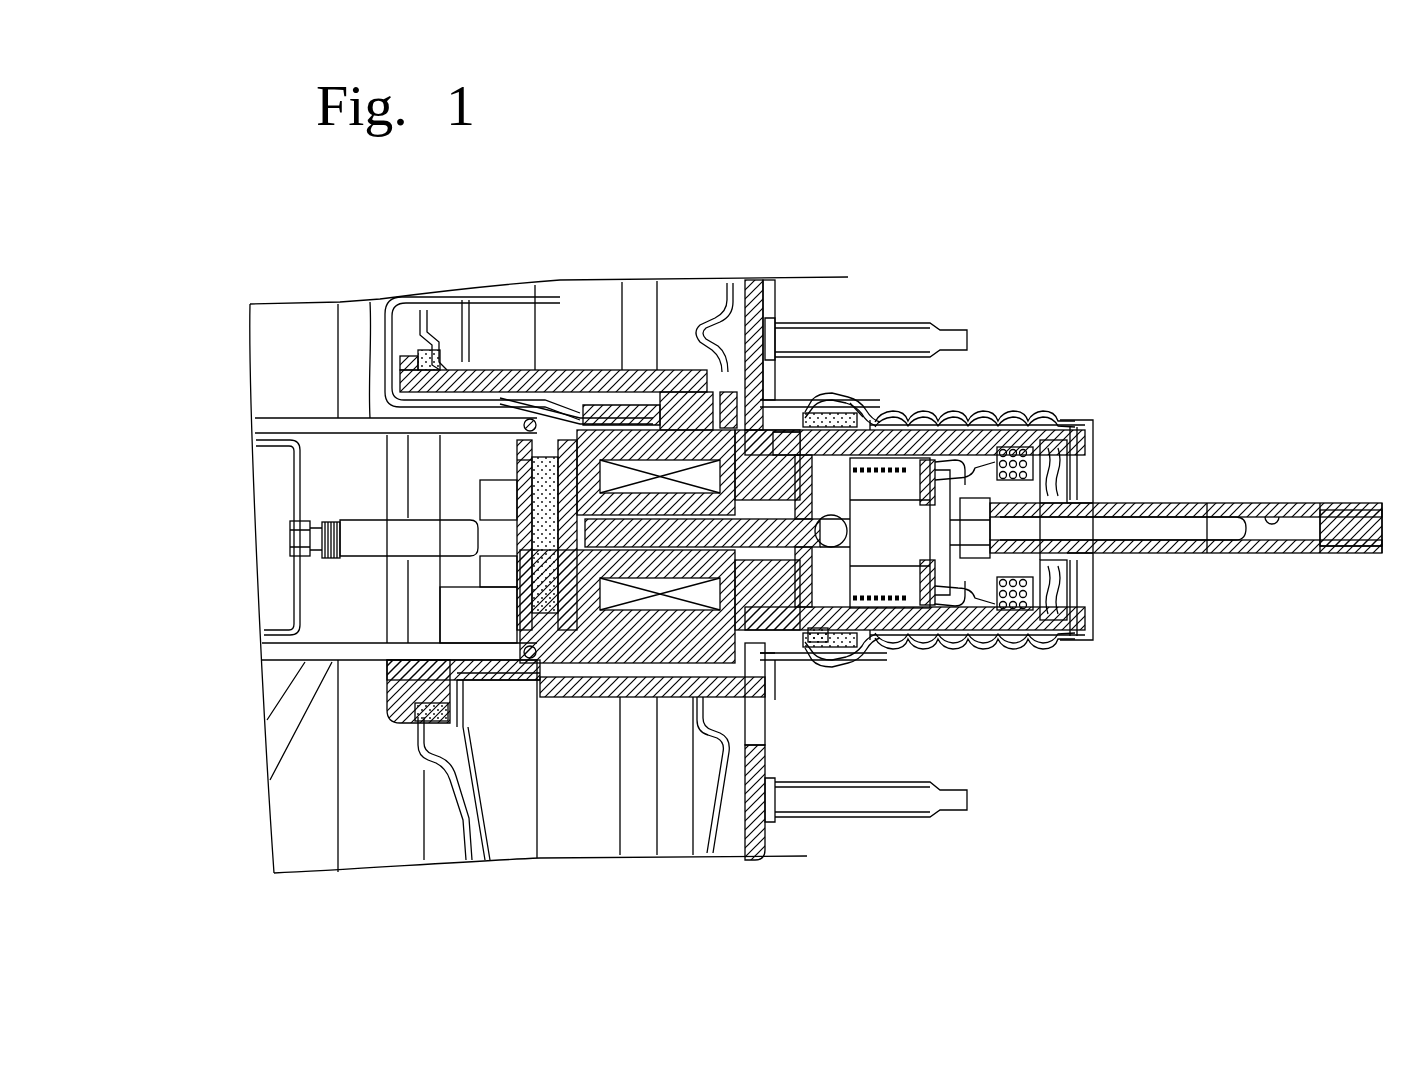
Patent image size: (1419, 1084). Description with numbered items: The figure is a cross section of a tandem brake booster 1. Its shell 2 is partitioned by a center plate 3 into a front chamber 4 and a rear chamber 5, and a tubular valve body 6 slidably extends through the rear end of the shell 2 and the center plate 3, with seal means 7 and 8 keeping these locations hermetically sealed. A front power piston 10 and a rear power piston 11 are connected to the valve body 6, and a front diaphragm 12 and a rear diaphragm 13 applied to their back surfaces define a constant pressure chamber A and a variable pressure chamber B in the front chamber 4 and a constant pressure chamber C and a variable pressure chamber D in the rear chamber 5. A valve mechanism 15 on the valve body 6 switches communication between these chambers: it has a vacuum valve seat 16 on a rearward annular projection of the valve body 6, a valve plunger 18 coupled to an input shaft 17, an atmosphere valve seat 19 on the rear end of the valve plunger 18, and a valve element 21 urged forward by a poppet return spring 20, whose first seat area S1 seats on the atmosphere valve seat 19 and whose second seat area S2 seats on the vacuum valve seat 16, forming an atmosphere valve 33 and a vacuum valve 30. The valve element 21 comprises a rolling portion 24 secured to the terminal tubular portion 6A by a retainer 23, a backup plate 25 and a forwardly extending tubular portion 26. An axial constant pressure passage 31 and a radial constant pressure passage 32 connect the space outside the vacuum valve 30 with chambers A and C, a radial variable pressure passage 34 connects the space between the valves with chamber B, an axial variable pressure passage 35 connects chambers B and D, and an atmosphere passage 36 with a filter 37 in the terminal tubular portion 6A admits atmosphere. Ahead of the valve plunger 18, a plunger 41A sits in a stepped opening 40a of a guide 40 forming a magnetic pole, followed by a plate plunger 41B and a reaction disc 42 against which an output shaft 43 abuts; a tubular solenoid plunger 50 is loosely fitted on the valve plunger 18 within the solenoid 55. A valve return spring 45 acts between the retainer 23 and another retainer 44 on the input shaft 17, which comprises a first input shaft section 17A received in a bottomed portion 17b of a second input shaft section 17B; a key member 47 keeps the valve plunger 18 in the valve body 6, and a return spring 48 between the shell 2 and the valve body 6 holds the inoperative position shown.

The tandem brake booster 1 is at (770, 258).
The shell 2 is at (273, 450).
The center plate 3 is at (493, 850).
The front chamber 4 is at (368, 847).
The rear chamber 5 is at (592, 847).
The valve body 6 is at (593, 372).
The terminal tubular portion 6A is at (1020, 437).
The seal means 7 is at (818, 423).
The seal means 8 is at (495, 340).
The front power piston 10 is at (460, 840).
The rear power piston 11 is at (707, 827).
The front diaphragm 12 is at (487, 843).
The rear diaphragm 13 is at (720, 840).
The valve mechanism 15 is at (940, 465).
The vacuum valve seat 16 is at (867, 627).
The input shaft 17 is at (1217, 545).
The first input shaft section 17A is at (1153, 530).
The second input shaft section 17B is at (1310, 550).
The bottomed portion 17b is at (1277, 517).
The valve plunger 18 is at (830, 480).
The atmosphere valve seat 19 is at (907, 630).
The poppet return spring 20 is at (948, 532).
The valve element 21 is at (953, 627).
The retainer 23 is at (973, 467).
The rolling portion 24 is at (967, 734).
The backup plate 25 is at (916, 532).
The tubular portion 26 is at (739, 531).
The vacuum valve 30 is at (873, 480).
The constant pressure passage 31 is at (770, 455).
The radial constant pressure passage 32 is at (703, 430).
The atmosphere valve 33 is at (903, 490).
The radial variable pressure passage 34 is at (783, 653).
The axial variable pressure passage 35 is at (593, 680).
The atmosphere passage 36 is at (1053, 647).
The filter 37 is at (1023, 640).
The guide 40 is at (518, 447).
The stepped opening 40a is at (520, 467).
The plunger 41A is at (523, 563).
The plate plunger 41B is at (517, 492).
The reaction disc 42 is at (517, 603).
The output shaft 43 is at (277, 547).
The retainer 44 is at (1058, 492).
The valve return spring 45 is at (1060, 438).
The key member 47 is at (800, 647).
The return spring 48 is at (372, 343).
The solenoid plunger 50 is at (690, 465).
The solenoid 55 is at (637, 420).
The first seat area S1 is at (935, 620).
The second seat area S2 is at (880, 643).
The constant pressure chamber A is at (358, 807).
The variable pressure chamber B is at (478, 780).
The constant pressure chamber C is at (567, 805).
The variable pressure chamber D is at (740, 840).